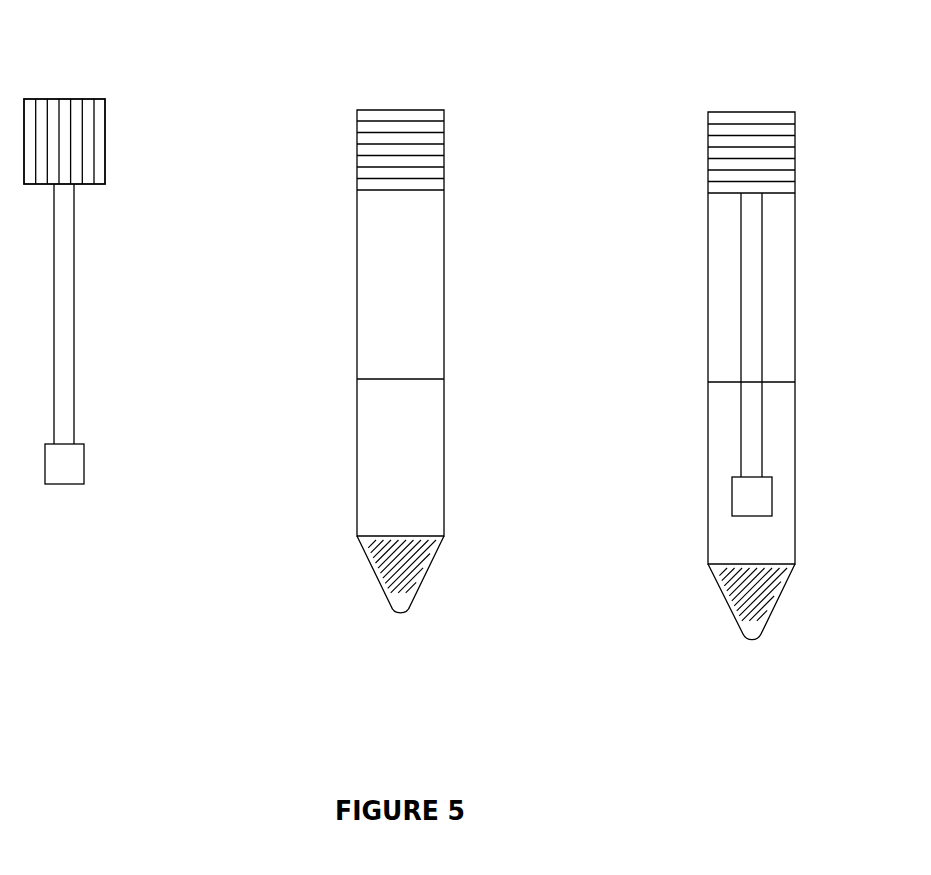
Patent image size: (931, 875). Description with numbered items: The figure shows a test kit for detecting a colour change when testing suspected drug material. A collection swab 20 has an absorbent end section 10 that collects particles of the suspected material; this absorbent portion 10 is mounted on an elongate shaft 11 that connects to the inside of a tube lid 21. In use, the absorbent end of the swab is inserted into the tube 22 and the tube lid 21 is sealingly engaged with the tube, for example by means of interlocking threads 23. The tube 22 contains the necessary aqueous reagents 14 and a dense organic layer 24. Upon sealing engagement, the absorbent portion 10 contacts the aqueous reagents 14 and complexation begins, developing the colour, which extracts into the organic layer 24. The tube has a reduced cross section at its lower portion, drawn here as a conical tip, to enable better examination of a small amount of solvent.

The absorbent end section 10 is at (68, 458).
The elongate shaft 11 is at (62, 333).
The aqueous reagents 14 is at (413, 449).
The collection swab 20 is at (78, 88).
The tube lid 21 is at (105, 141).
The tube 22 is at (462, 268).
The interlocking threads 23 is at (438, 141).
The dense organic layer 24 is at (415, 567).